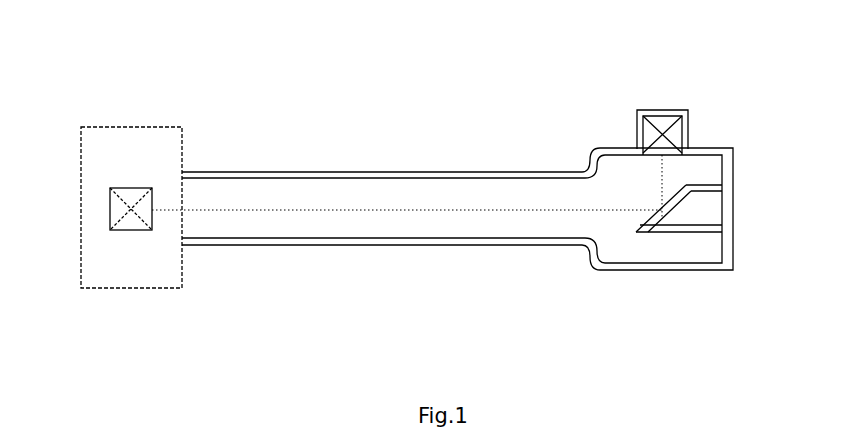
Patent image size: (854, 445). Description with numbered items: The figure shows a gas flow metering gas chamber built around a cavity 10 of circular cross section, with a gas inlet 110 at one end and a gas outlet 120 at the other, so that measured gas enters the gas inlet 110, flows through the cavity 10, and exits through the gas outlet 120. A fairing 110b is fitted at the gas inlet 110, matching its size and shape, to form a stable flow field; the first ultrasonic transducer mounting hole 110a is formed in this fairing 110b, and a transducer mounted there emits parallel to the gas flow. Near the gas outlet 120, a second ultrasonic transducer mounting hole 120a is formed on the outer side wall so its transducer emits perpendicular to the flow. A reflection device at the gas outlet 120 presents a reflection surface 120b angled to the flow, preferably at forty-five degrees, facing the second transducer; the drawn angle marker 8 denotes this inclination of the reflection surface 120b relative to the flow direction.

The cavity 10 is at (363, 239).
The gas inlet 110 is at (148, 127).
The first ultrasonic transducer mounting hole 110a is at (143, 210).
The fairing 110b is at (140, 269).
The gas outlet 120 is at (620, 149).
The second ultrasonic transducer mounting hole 120a is at (657, 140).
The reflection surface 120b is at (662, 213).
The angle marker 8 is at (676, 198).